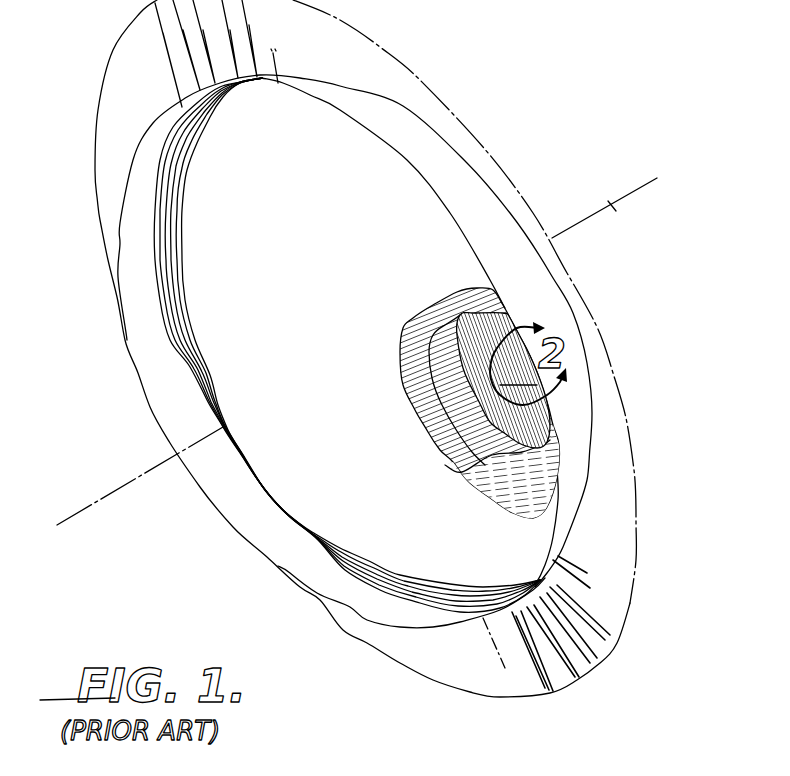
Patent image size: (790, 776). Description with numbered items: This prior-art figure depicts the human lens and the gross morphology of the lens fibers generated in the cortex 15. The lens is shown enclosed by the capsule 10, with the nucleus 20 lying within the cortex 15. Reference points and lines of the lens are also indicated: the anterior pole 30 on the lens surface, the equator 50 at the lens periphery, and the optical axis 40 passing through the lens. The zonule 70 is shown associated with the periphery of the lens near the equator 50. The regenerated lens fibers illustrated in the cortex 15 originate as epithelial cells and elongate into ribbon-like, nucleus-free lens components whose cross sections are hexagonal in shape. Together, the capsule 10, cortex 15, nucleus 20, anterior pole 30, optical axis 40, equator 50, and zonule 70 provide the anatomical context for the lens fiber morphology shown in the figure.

The capsule 10 is at (150, 370).
The cortex 15 is at (455, 473).
The nucleus 20 is at (432, 420).
The anterior pole 30 is at (223, 427).
The optical axis 40 is at (626, 218).
The equator 50 is at (533, 590).
The zonule 70 is at (570, 683).